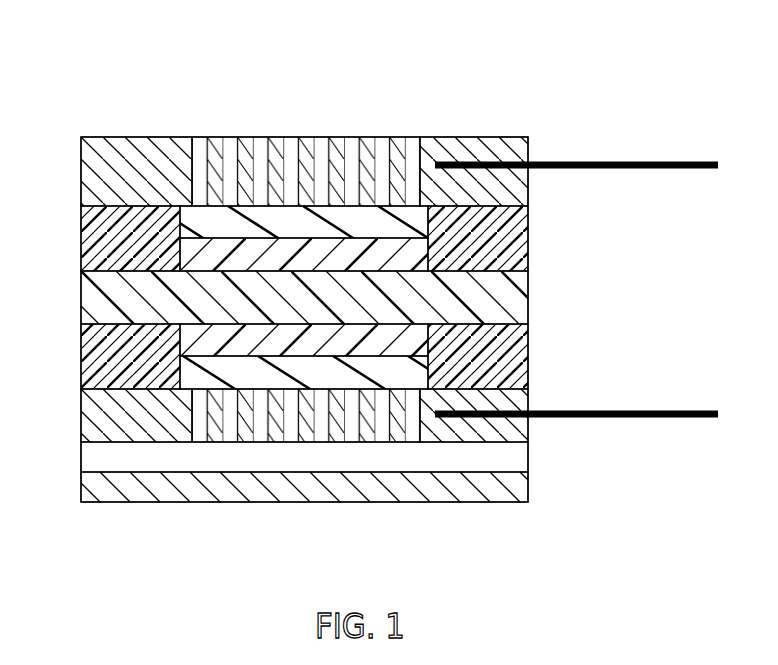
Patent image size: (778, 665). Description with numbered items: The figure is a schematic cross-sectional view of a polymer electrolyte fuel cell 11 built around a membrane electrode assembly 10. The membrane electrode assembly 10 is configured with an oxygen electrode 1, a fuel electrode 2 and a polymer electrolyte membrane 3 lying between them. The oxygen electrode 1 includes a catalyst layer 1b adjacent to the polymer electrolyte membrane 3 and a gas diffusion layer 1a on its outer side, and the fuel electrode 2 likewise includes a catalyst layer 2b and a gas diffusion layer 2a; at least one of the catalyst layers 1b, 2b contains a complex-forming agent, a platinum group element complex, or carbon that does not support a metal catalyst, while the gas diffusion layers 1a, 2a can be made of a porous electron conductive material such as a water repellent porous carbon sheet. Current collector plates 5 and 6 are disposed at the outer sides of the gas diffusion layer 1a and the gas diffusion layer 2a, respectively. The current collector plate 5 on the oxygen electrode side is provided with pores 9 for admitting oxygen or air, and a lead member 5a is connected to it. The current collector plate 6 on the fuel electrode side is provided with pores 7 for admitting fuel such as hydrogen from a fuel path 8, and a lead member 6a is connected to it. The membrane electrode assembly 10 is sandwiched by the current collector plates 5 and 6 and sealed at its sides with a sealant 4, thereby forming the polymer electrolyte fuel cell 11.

The polymer electrolyte fuel cell 11 is at (290, 92).
The current collector plate 5 is at (462, 137).
The pores 9 is at (380, 137).
The lead member 5a is at (630, 161).
The sealant 4 is at (92, 242).
The oxygen electrode 1 is at (593, 217).
The gas diffusion layer 1a is at (418, 224).
The catalyst layer 1b is at (418, 252).
The polymer electrolyte membrane 3 is at (513, 301).
The fuel electrode 2 is at (593, 337).
The catalyst layer 2b is at (418, 345).
The gas diffusion layer 2a is at (418, 375).
The membrane electrode assembly 10 is at (643, 205).
The current collector plate 6 is at (468, 432).
The pores 7 is at (378, 432).
The lead member 6a is at (627, 419).
The fuel path 8 is at (213, 463).